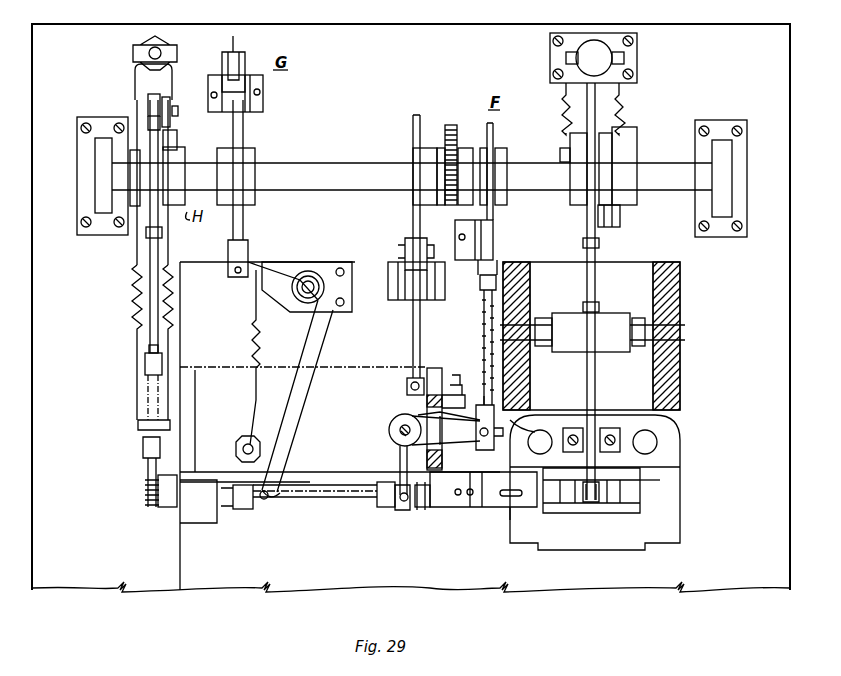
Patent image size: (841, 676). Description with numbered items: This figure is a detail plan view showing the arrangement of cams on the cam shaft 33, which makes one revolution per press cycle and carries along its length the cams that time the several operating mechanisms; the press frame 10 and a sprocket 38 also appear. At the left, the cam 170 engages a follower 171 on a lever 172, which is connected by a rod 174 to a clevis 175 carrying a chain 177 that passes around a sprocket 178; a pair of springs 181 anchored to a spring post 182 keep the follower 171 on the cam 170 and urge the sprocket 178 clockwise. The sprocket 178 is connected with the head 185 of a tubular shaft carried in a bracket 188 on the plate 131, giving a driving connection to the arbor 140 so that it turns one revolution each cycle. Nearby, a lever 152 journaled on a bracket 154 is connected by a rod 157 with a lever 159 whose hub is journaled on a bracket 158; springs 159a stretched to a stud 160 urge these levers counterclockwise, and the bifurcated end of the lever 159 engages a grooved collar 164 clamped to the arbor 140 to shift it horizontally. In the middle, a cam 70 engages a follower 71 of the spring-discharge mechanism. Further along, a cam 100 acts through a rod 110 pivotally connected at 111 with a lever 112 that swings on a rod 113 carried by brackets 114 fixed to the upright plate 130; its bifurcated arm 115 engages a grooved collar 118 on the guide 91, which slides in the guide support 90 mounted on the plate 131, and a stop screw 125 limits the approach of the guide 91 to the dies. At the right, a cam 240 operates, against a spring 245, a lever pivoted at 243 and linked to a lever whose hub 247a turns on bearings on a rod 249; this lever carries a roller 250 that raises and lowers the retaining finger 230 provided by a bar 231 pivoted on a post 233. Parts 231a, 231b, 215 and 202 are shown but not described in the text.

The cam shaft 33 is at (337, 170).
The spring post 182 is at (168, 46).
The springs 181 is at (172, 78).
The lever 172 is at (147, 104).
The follower 171 is at (168, 99).
The cam 170 is at (176, 138).
The rod 174 is at (158, 255).
The clevis 175 is at (144, 362).
The chain 177 is at (146, 395).
The sprocket 178 is at (147, 495).
The head 185 is at (166, 510).
The bracket 188 is at (198, 528).
The grooved collar 164 is at (243, 512).
The lever 152 is at (240, 50).
The bracket 154 is at (264, 80).
The rod 157 is at (245, 133).
The lever 159 is at (270, 272).
The springs 159a is at (250, 345).
The spring stud 160 is at (236, 448).
The bracket 158 is at (328, 312).
The cam 70 is at (411, 118).
The follower 71 is at (406, 244).
The sprocket 38 is at (450, 125).
The cam 100 is at (494, 130).
The rod 110 is at (483, 318).
The upright plate 130 is at (434, 370).
The brackets 114 is at (418, 412).
The rod 113 is at (400, 430).
The stop screw 125 is at (446, 430).
The lever 112 is at (450, 448).
The pivotal connection 111 is at (504, 432).
The bifurcated arm 115 is at (399, 458).
The arbor 140 is at (351, 498).
The grooved collar 118 is at (400, 510).
The guide 91 is at (425, 507).
The plate 131 is at (498, 506).
The guide support 90 is at (527, 500).
The bar 231 is at (657, 440).
The screw 231a is at (576, 426).
The screw 231b is at (604, 426).
The roller 250 is at (596, 392).
The block 215 is at (582, 498).
The retaining finger 230 is at (593, 505).
The block 202 is at (632, 492).
The post 233 is at (605, 62).
The spring 245 is at (622, 95).
The cam 240 is at (620, 130).
The pivot 243 is at (598, 210).
The frame 10 is at (680, 280).
The hub 247a is at (566, 312).
The rod 249 is at (665, 330).